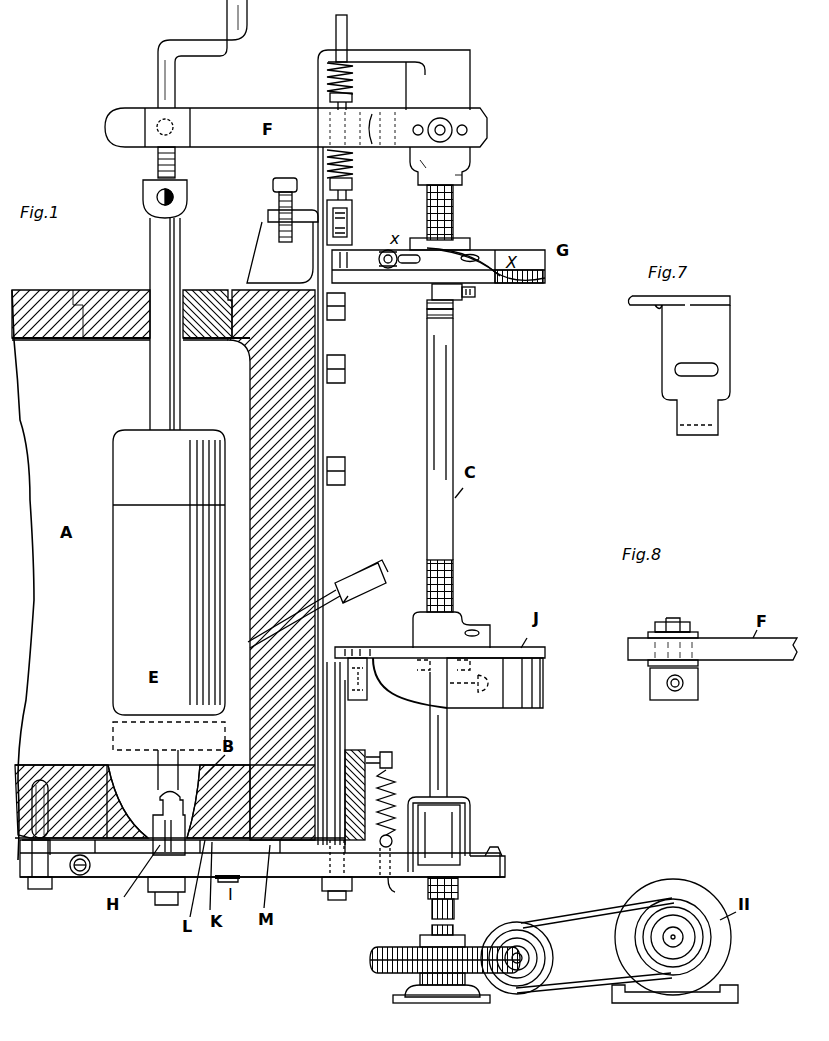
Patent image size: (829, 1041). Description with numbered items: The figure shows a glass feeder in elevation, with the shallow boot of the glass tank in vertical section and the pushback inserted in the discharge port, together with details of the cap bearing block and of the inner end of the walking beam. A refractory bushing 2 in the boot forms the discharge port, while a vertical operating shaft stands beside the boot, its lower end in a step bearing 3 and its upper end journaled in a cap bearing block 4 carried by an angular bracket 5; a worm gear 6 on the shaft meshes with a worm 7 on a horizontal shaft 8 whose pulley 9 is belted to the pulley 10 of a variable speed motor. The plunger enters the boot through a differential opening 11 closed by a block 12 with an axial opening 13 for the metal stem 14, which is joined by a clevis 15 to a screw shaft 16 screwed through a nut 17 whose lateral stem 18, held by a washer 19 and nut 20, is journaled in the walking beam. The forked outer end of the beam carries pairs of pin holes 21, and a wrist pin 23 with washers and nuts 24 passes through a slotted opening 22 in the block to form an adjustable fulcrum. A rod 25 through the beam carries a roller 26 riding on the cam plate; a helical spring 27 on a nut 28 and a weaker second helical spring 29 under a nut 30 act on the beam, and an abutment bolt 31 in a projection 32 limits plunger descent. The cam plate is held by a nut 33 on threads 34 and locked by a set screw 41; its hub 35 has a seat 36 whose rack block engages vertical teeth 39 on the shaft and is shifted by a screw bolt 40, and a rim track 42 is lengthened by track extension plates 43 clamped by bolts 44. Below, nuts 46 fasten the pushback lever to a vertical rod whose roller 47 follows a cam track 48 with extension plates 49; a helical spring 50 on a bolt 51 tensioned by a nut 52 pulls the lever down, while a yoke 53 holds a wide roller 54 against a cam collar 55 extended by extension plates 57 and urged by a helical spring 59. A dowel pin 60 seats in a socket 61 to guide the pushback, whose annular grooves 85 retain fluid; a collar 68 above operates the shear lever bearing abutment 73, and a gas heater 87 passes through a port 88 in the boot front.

In FIG. 1, the bushing 2 is at (122, 770).
In FIG. 1, the step bearing 3 is at (455, 1003).
In FIG. 1, the cap bearing block 4 is at (424, 86).
In FIG. 7, the cap bearing block 4 is at (696, 370).
In FIG. 1, the angular bracket 5 is at (390, 55).
In FIG. 7, the angular bracket 5 is at (650, 306).
In FIG. 1, the worm gear 6 is at (370, 960).
In FIG. 1, the worm 7 is at (515, 975).
In FIG. 1, the horizontally journaled shaft 8 is at (517, 945).
In FIG. 1, the pulley 9 is at (538, 962).
In FIG. 1, the pulley 10 is at (700, 938).
In FIG. 1, the differential opening 11 is at (82, 340).
In FIG. 1, the block 12 is at (98, 290).
In FIG. 1, the axial opening 13 is at (148, 340).
In FIG. 1, the metal stem 14 is at (150, 374).
In FIG. 1, the clevis 15 is at (188, 192).
In FIG. 1, the screw shaft 16 is at (177, 163).
In FIG. 8, the screw shaft 16 is at (676, 692).
In FIG. 1, the nut 17 is at (185, 112).
In FIG. 8, the nut 17 is at (688, 689).
In FIG. 8, the laterally extending stem 18 is at (676, 620).
In FIG. 8, the washer 19 is at (648, 635).
In FIG. 8, the nut 20 is at (657, 625).
In FIG. 1, the pin holes 21 is at (467, 130).
In FIG. 7, the slotted opening 22 is at (720, 369).
In FIG. 1, the wrist pin 23 is at (470, 140).
In FIG. 1, the washers and nuts 24 is at (448, 127).
In FIG. 1, the rod 25 is at (348, 32).
In FIG. 1, the roller 26 is at (351, 222).
In FIG. 1, the helical spring 27 is at (355, 163).
In FIG. 1, the nut 28 is at (353, 182).
In FIG. 1, the second helical spring 29 is at (355, 80).
In FIG. 1, the nut 30 is at (354, 99).
In FIG. 1, the abutment bolt 31 is at (273, 188).
In FIG. 1, the projection 32 is at (268, 230).
In FIG. 1, the nut 33 is at (462, 301).
In FIG. 1, the threads 34 is at (457, 316).
In FIG. 1, the hub 35 is at (462, 238).
In FIG. 1, the seat 36 is at (470, 250).
In FIG. 1, the vertical teeth 39 is at (456, 208).
In FIG. 1, the screw bolt 40 is at (500, 256).
In FIG. 1, the set screw 41 is at (478, 292).
In FIG. 1, the rim track 42 is at (543, 277).
In FIG. 1, the track extension plates 43 is at (442, 266).
In FIG. 1, the bolts 44 is at (383, 268).
In FIG. 1, the nuts 46 is at (325, 853).
In FIG. 1, the roller 47 is at (367, 688).
In FIG. 1, the cam track 48 is at (546, 690).
In FIG. 1, the extension plates 49 is at (446, 716).
In FIG. 1, the helical spring 50 is at (390, 798).
In FIG. 1, the bolt 51 is at (390, 882).
In FIG. 1, the nut 52 is at (380, 878).
In FIG. 1, the yoke 53 is at (470, 800).
In FIG. 1, the wide roller 54 is at (462, 826).
In FIG. 1, the cam collar 55 is at (507, 869).
In FIG. 1, the extension plates 57 is at (505, 858).
In FIG. 1, the helical spring 59 is at (80, 876).
In FIG. 1, the dowel pin 60 is at (38, 765).
In FIG. 1, the socket 61 is at (43, 780).
In FIG. 1, the collar 68 is at (497, 848).
In FIG. 1, the abutment 73 is at (222, 884).
In FIG. 1, the annular grooves 85 is at (163, 790).
In FIG. 1, the gas heater 87 is at (348, 580).
In FIG. 1, the port 88 is at (258, 640).